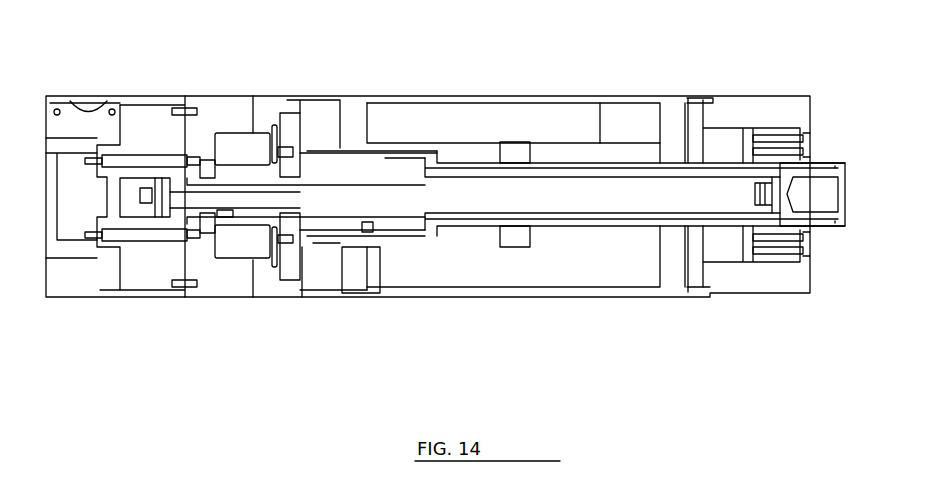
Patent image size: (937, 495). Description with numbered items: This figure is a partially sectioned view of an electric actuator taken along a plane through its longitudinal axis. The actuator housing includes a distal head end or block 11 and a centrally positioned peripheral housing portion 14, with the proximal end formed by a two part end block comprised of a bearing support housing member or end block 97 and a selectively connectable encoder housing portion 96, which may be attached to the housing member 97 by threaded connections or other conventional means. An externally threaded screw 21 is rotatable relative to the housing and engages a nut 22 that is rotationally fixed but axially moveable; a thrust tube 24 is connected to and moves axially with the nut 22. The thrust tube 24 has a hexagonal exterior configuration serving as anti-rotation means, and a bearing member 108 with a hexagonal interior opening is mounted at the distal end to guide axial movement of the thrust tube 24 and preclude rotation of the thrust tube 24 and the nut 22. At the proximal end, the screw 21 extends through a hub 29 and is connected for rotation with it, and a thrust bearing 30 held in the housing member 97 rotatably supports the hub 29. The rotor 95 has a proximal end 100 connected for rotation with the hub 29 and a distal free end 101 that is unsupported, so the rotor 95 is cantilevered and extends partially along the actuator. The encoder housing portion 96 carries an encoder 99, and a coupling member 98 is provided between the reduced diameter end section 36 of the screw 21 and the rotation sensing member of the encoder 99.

The distal head end or block 11 is at (745, 107).
The centrally positioned peripheral housing portion 14 is at (620, 158).
The externally threaded screw 21 is at (535, 193).
The nut 22 is at (367, 173).
The thrust tube 24 is at (612, 96).
The hub 29 is at (233, 215).
The thrust bearing 30 is at (253, 237).
The reduced diameter end section 36 is at (157, 195).
The rotor 95 is at (358, 250).
The encoder housing portion 96 is at (137, 97).
The bearing support housing member or end block 97 is at (235, 97).
The coupling member 98 is at (133, 193).
The encoder 99 is at (70, 172).
The proximal end of the rotor 100 is at (323, 152).
The distal free end of the rotor 101 is at (530, 147).
The bearing member 108 is at (776, 158).